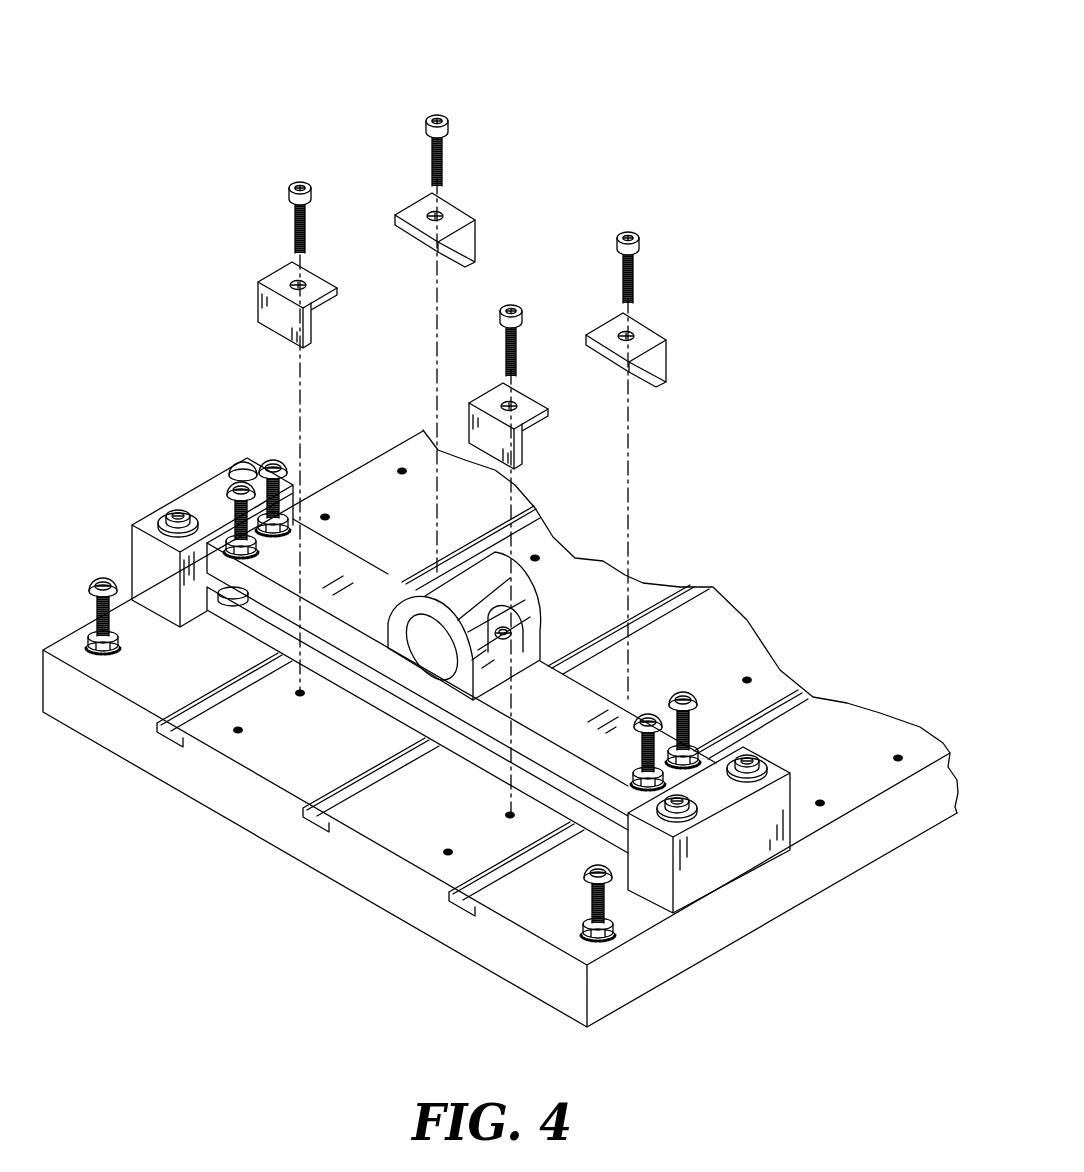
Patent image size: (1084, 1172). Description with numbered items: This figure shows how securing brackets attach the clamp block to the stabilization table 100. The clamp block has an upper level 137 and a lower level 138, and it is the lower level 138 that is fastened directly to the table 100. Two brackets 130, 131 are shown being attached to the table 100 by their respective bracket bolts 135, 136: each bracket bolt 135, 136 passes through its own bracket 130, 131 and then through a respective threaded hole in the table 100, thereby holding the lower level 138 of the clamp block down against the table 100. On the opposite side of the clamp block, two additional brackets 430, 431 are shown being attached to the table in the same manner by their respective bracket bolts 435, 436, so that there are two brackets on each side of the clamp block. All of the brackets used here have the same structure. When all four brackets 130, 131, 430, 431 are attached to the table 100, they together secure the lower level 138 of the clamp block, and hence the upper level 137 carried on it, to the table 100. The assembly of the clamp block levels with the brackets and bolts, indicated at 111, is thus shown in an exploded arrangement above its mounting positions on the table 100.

The table 100 is at (750, 608).
The rail clamp assembly 111 is at (557, 634).
The bracket 130 is at (272, 310).
The bracket 131 is at (486, 428).
The bracket bolt 135 is at (298, 178).
The bracket bolt 136 is at (515, 300).
The upper level 137 is at (372, 592).
The lower level 138 is at (372, 700).
The bracket 430 is at (470, 210).
The bracket 431 is at (656, 332).
The bracket bolt 435 is at (440, 114).
The bracket bolt 436 is at (636, 232).